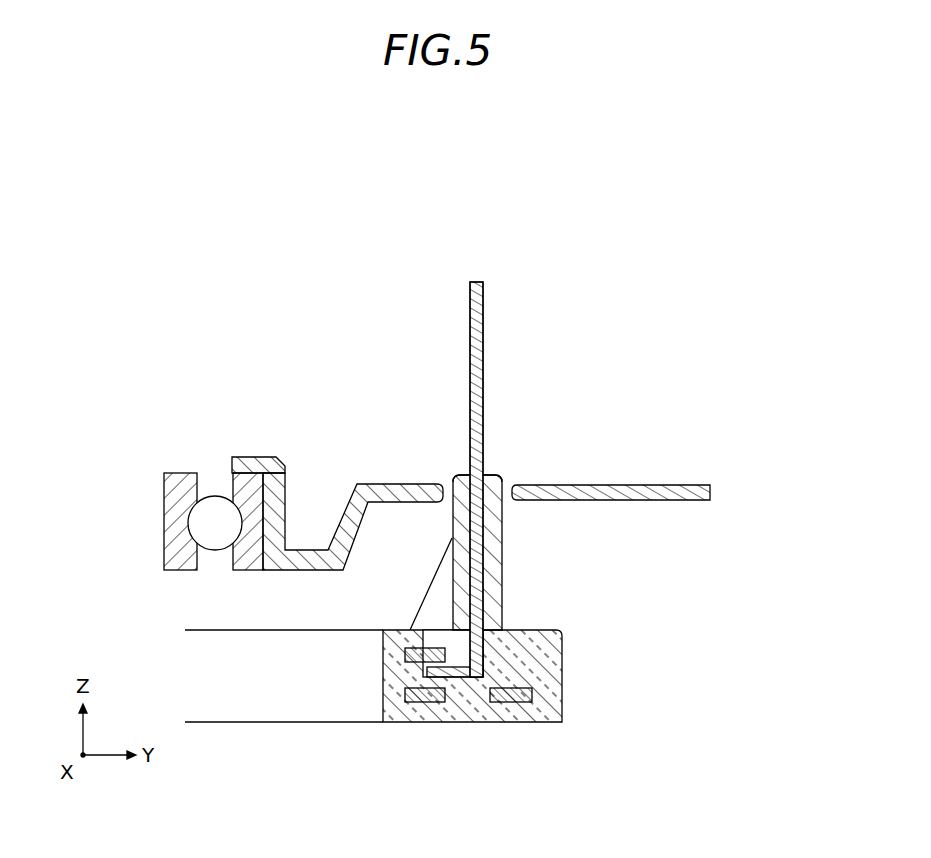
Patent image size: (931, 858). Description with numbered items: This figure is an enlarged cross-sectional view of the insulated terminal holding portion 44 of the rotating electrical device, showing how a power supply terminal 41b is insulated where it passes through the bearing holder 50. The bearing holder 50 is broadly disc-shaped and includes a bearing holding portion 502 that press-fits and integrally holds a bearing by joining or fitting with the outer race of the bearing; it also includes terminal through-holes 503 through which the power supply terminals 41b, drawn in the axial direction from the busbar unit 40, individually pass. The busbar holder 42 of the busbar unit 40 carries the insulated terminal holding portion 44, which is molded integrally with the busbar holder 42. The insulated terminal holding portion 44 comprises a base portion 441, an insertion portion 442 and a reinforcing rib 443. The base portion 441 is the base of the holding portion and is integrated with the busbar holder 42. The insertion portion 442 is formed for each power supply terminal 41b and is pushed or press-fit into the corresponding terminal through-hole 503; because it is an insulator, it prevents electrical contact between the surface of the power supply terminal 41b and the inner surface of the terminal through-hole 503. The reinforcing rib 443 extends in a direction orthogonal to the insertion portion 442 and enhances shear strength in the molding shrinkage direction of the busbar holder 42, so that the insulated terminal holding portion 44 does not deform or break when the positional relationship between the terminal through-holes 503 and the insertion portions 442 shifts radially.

The busbar unit 40 is at (445, 572).
The busbar holder 42 is at (562, 676).
The insulated terminal holding portion 44 is at (499, 526).
The base portion 441 is at (502, 585).
The insertion portion 442 is at (498, 475).
The reinforcing rib 443 is at (420, 596).
The power supply terminal 41b is at (482, 330).
The bearing holder 50 is at (736, 492).
The bearing holding portion 502 is at (163, 497).
The terminal through-hole 503 is at (455, 482).